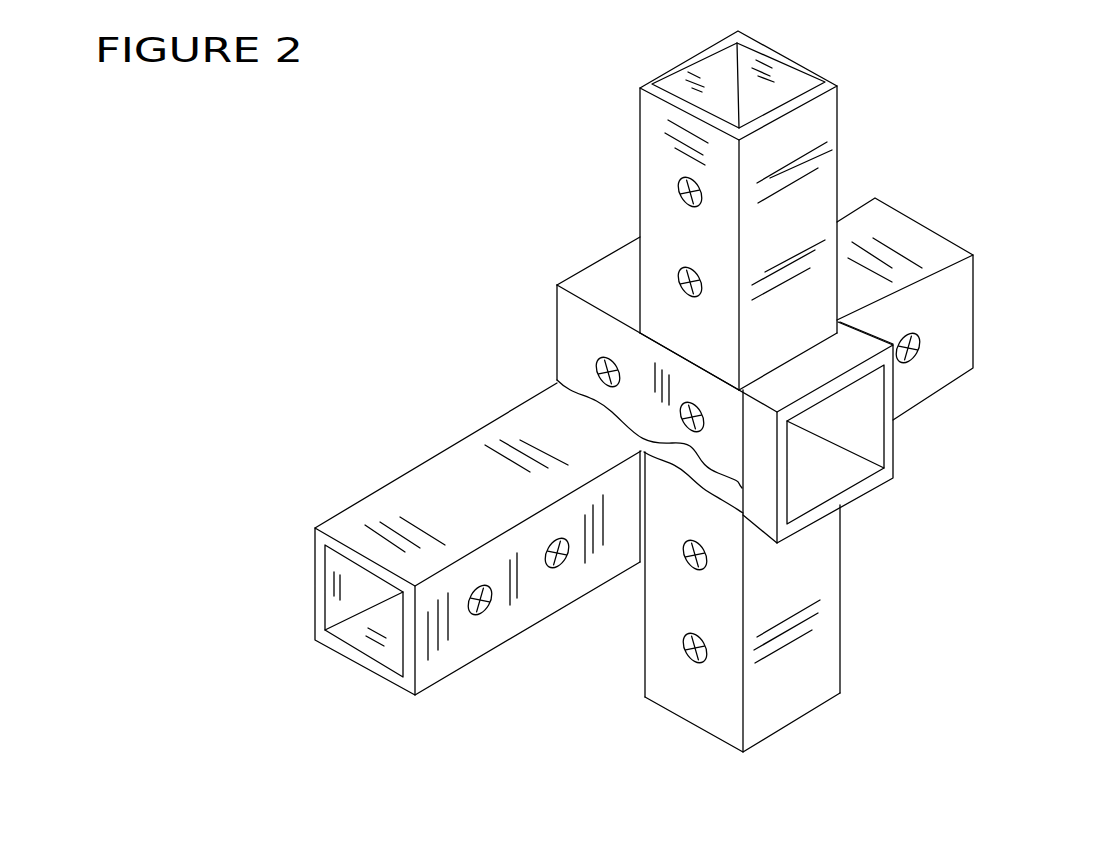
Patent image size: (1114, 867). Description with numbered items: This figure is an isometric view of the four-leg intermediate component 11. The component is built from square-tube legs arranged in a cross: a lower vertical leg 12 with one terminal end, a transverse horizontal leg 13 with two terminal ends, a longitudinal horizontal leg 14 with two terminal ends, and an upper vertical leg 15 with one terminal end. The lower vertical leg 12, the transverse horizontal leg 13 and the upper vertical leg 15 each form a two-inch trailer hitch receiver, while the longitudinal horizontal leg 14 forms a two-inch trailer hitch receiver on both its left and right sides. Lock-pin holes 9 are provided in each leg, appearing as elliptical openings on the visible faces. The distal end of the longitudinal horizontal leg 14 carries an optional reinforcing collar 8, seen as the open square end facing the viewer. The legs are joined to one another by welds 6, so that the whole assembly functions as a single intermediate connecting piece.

The welds 6 is at (680, 282).
The reinforcing collar 8 is at (760, 520).
The lock-pin holes 9 is at (680, 190).
The four-leg intermediate component 11 is at (553, 335).
The lower vertical leg 12 is at (810, 695).
The transverse horizontal leg 13 is at (458, 462).
The longitudinal horizontal leg 14 is at (572, 313).
The upper vertical leg 15 is at (825, 113).